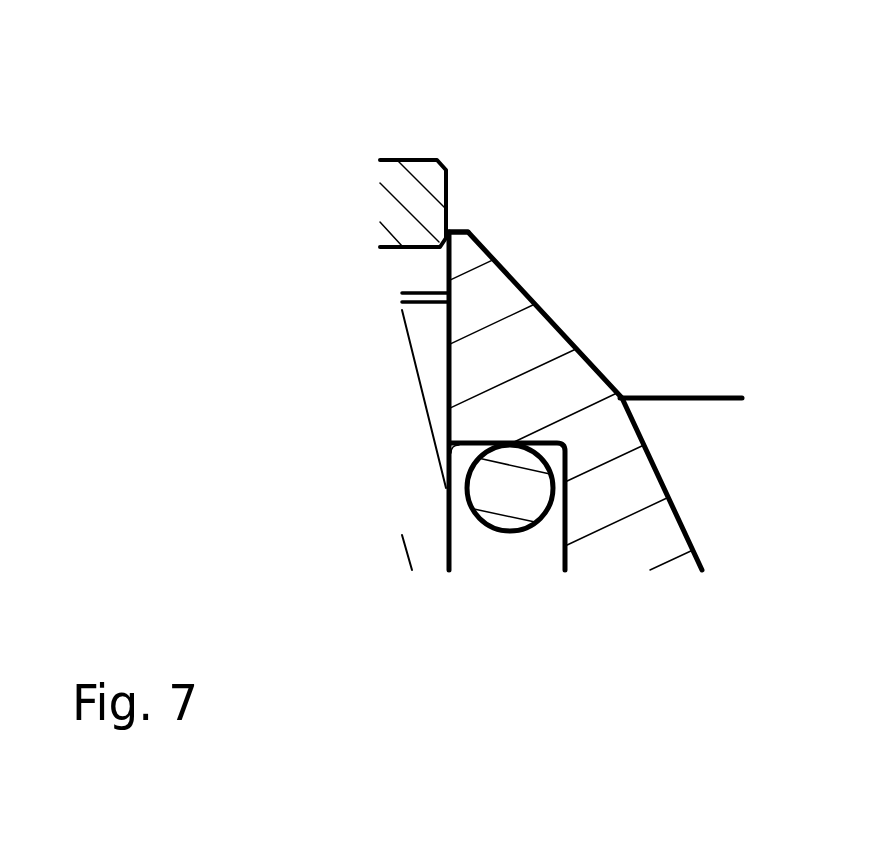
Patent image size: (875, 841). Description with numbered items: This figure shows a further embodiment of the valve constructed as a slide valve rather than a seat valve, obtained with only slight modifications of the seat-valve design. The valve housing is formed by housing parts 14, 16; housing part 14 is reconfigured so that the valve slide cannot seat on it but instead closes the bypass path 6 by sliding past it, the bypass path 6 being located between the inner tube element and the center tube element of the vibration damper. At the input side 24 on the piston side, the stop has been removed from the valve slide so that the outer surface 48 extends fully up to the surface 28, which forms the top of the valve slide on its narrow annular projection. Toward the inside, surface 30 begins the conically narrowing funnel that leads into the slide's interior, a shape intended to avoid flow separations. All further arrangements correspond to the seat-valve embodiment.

The bypass path 6 is at (422, 272).
The housing part 14 is at (433, 515).
The housing part 16 is at (387, 217).
The input side 24 is at (724, 112).
The surface 28 is at (457, 230).
The surface 30 is at (552, 322).
The outer surface 48 is at (447, 352).